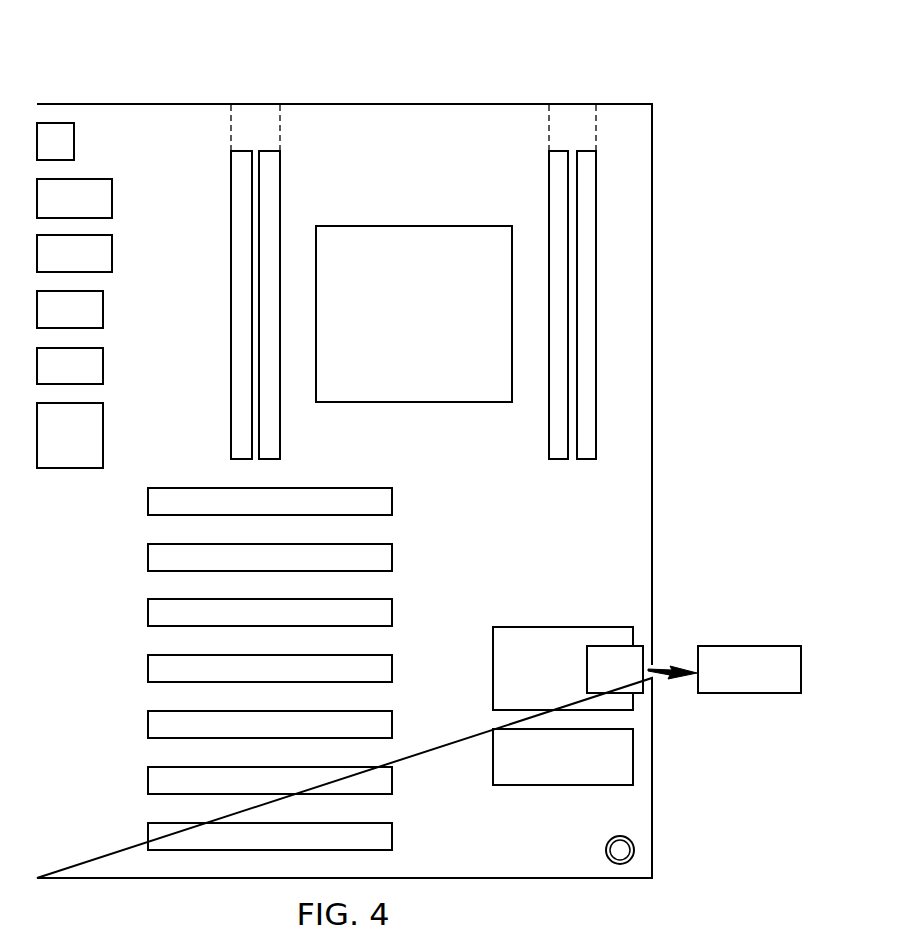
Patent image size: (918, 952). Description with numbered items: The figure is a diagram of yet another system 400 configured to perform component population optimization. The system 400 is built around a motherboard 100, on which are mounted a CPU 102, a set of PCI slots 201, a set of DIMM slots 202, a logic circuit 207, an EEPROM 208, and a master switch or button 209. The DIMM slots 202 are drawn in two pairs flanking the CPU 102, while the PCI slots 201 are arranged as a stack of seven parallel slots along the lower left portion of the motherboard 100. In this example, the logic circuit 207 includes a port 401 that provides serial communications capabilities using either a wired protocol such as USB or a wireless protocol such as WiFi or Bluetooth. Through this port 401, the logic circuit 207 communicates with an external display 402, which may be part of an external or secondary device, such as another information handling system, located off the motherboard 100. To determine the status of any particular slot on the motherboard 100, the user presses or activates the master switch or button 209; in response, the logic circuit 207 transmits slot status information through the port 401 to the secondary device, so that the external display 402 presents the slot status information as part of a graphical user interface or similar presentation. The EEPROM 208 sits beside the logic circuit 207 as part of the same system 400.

The system 400 is at (164, 62).
The motherboard 100 is at (184, 296).
The CPU 102 is at (432, 342).
The DIMM slots 202 is at (230, 90).
The PCI slots 201 is at (124, 487).
The logic circuit 207 is at (493, 678).
The port 401 is at (613, 646).
The external display 402 is at (752, 694).
The EEPROM 208 is at (493, 759).
The master switch or button 209 is at (605, 850).